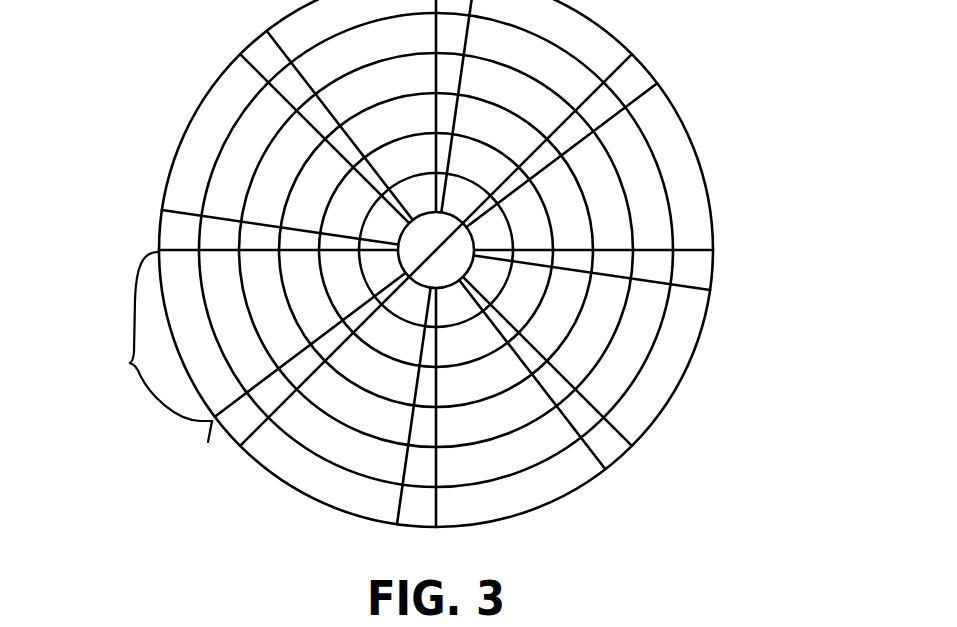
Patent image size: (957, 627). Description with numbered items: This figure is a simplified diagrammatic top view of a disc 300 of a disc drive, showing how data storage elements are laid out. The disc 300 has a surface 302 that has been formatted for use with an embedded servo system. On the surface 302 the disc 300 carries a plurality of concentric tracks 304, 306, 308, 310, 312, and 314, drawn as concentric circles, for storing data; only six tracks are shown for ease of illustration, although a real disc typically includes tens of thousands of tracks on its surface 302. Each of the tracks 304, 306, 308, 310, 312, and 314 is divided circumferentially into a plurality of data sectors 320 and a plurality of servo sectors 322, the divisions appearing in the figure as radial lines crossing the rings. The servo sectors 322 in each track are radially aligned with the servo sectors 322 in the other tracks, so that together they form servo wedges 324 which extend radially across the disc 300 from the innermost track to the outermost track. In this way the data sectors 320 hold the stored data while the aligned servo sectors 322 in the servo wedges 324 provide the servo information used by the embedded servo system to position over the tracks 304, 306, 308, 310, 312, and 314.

The disc 300 is at (298, 487).
The surface 302 is at (378, 88).
The concentric track 304 is at (552, 183).
The concentric track 306 is at (522, 217).
The concentric track 308 is at (492, 242).
The concentric track 310 is at (573, 355).
The concentric track 312 is at (632, 350).
The concentric track 314 is at (682, 337).
The data sector 320 is at (129, 363).
The servo sector 322 is at (238, 443).
The servo wedge 324 is at (281, 191).